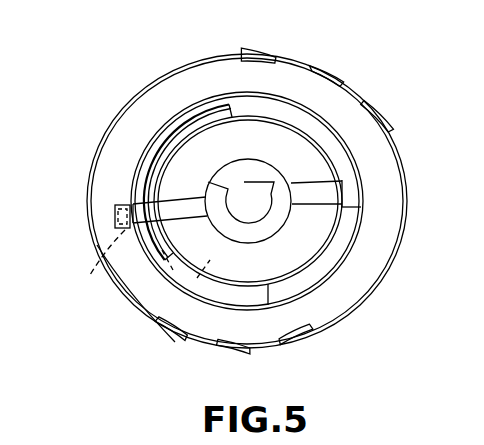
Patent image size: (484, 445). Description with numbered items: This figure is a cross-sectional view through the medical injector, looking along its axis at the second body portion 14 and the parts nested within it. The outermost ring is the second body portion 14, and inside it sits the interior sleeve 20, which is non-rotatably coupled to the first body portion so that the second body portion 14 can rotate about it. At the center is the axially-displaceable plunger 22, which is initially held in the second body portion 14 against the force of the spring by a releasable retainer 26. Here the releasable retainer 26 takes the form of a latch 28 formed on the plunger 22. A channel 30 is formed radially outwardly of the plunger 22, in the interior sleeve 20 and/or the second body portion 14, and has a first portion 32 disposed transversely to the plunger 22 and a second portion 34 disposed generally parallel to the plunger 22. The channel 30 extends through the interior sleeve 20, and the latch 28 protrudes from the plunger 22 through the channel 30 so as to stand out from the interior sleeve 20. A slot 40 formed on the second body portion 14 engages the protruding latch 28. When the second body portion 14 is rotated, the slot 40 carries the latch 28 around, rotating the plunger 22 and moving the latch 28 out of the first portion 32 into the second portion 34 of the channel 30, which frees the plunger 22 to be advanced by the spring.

The second body portion 14 is at (312, 78).
The interior sleeve 20 is at (153, 300).
The plunger 22 is at (270, 229).
The releasable retainer 26 is at (140, 132).
The latch 28 is at (188, 207).
The channel 30 is at (140, 236).
The first portion 32 is at (165, 262).
The second portion 34 is at (208, 288).
The slot 40 is at (123, 207).